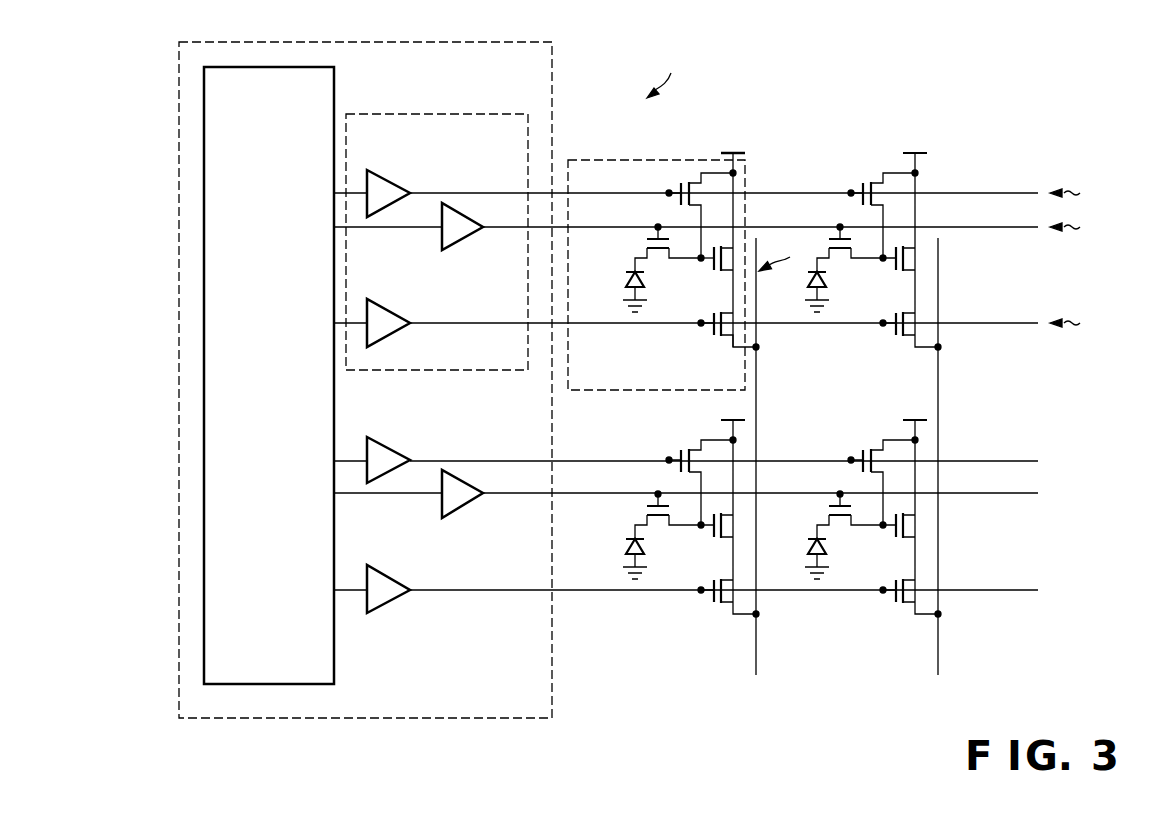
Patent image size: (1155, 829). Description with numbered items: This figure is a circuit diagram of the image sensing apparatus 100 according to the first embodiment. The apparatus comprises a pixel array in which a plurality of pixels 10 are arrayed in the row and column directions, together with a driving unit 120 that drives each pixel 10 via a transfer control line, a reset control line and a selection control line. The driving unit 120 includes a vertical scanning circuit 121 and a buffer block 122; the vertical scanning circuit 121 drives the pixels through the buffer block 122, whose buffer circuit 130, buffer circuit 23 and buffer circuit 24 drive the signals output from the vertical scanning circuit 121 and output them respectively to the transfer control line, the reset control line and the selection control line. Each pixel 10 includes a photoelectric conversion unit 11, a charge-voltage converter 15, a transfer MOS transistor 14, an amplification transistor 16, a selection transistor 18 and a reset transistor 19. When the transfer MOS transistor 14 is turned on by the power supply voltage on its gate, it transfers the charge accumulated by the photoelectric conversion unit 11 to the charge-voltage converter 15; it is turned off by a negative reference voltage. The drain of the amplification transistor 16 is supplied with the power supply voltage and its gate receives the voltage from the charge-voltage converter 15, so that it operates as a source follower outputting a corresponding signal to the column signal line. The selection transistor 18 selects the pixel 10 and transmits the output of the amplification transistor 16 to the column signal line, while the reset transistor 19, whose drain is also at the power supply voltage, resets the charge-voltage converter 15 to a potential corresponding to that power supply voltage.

The image sensing apparatus 100 is at (498, 750).
The driving unit 120 is at (376, 718).
The vertical scanning circuit 121 is at (336, 78).
The buffer block 122 is at (480, 113).
The buffer circuit 23 is at (394, 157).
The buffer circuit 24 is at (394, 285).
The buffer circuit 130 is at (462, 245).
The pixel 10 is at (603, 159).
The photoelectric conversion unit 11 is at (624, 276).
The transfer MOS transistor 14 is at (643, 241).
The charge-voltage converter 15 is at (698, 263).
The amplification transistor 16 is at (717, 272).
The selection transistor 18 is at (717, 337).
The reset transistor 19 is at (678, 179).